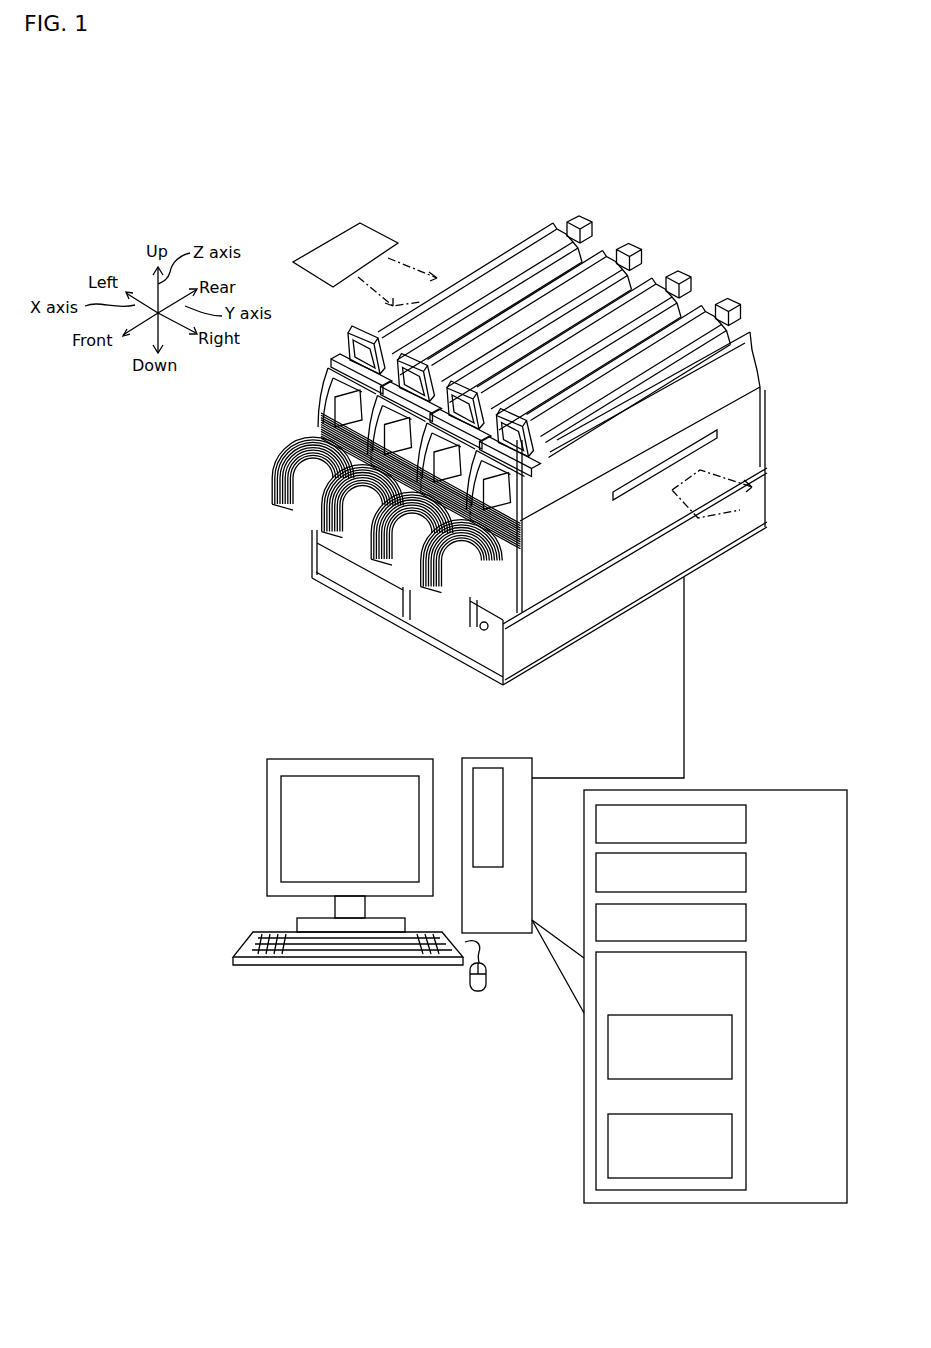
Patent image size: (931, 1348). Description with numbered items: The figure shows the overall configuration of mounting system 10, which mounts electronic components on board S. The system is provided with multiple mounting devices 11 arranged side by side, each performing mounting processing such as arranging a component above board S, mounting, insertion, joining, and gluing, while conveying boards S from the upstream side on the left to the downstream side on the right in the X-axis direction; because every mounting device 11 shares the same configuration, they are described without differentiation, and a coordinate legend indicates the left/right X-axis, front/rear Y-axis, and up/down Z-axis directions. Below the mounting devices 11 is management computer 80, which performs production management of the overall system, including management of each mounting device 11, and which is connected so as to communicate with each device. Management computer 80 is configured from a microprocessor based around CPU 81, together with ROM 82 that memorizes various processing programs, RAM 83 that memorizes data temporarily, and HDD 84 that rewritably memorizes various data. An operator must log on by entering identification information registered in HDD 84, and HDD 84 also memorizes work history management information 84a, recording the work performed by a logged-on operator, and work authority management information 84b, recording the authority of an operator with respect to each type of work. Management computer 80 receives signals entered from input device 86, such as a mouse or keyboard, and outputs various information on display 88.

The mounting system 10 is at (515, 115).
The mounting device 11 is at (703, 314).
The board S is at (360, 223).
The management computer 80 is at (500, 758).
The CPU 81 is at (748, 820).
The ROM 82 is at (748, 869).
The RAM 83 is at (748, 918).
The HDD 84 is at (748, 1074).
The work history management information 84a is at (671, 1015).
The work authority management information 84b is at (671, 1114).
The input device 86 is at (346, 965).
The display 88 is at (372, 759).